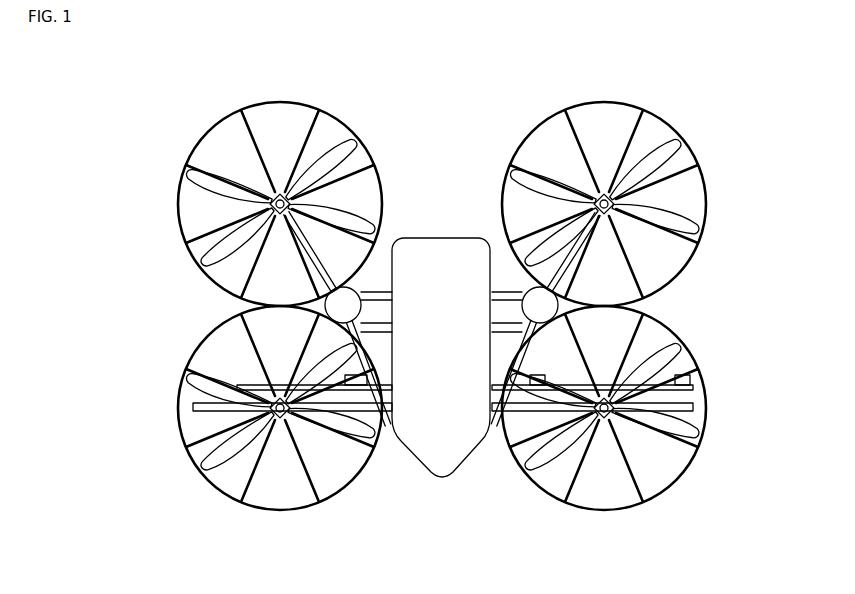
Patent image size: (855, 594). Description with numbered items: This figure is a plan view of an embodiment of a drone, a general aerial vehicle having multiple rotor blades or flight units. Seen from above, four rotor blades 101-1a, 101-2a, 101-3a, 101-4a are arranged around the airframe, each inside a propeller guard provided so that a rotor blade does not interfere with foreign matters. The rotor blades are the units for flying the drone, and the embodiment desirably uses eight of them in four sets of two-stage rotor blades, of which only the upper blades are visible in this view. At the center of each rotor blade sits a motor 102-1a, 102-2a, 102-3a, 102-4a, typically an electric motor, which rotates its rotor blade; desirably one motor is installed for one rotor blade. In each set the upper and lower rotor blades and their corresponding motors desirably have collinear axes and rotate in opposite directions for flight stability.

The rotor blade 101-1a is at (670, 148).
The rotor blade 101-2a is at (668, 423).
The rotor blade 101-3a is at (346, 148).
The rotor blade 101-4a is at (222, 464).
The motor 102-1a is at (603, 198).
The motor 102-2a is at (612, 414).
The motor 102-3a is at (279, 198).
The motor 102-4a is at (286, 415).